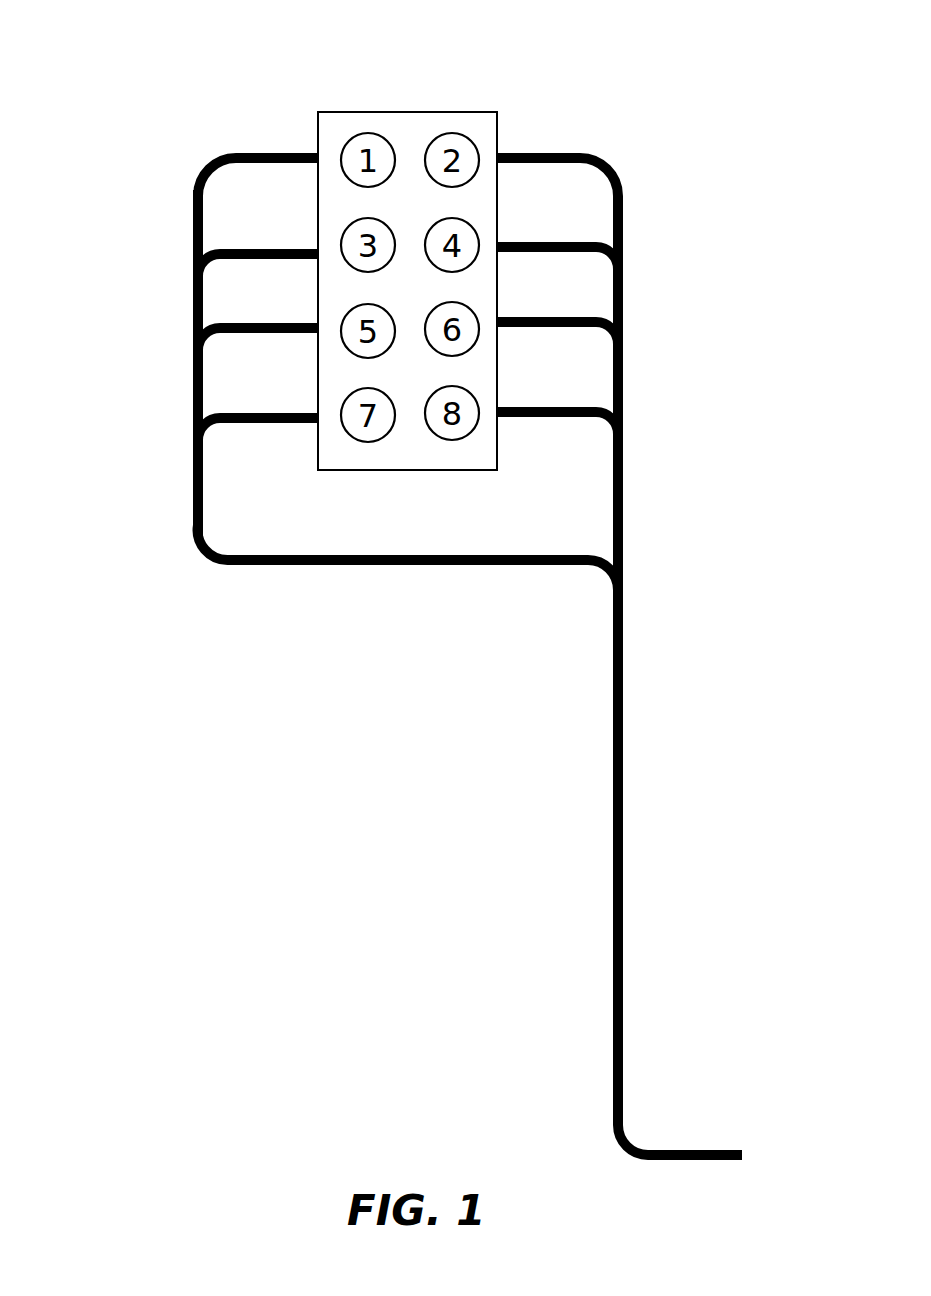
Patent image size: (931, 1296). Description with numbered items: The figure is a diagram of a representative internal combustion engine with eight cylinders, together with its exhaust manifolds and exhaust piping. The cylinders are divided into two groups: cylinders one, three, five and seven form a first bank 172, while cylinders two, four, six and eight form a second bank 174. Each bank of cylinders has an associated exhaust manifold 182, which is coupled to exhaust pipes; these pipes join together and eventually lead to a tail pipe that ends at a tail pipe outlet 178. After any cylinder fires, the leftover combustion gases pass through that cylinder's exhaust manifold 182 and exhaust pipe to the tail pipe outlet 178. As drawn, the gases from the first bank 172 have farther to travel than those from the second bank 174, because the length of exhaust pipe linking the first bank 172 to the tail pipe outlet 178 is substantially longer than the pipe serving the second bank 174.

The first bank 172 is at (360, 68).
The second bank 174 is at (452, 64).
The tail pipe outlet 178 is at (742, 1152).
The exhaust manifold 182 is at (197, 212).